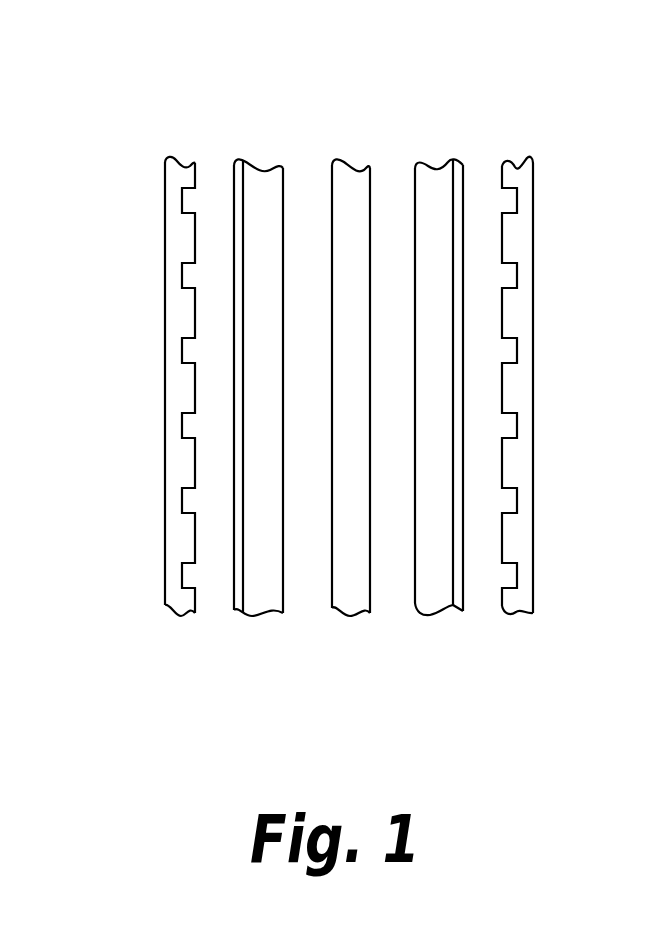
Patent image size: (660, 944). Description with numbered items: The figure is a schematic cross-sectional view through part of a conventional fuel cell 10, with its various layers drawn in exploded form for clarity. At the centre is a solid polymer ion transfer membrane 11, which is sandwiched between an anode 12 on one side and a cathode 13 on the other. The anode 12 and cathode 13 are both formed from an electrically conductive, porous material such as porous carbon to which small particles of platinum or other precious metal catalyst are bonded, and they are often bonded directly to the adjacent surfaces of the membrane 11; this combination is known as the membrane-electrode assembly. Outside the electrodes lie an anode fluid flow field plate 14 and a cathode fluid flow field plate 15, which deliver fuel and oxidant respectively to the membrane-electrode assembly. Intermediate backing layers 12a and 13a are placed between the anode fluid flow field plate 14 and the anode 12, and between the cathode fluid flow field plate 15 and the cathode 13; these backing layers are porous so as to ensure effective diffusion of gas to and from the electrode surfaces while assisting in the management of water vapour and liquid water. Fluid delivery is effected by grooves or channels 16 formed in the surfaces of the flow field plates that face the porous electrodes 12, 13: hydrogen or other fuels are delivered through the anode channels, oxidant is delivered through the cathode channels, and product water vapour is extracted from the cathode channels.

The fuel cell 10 is at (170, 89).
The solid polymer ion transfer membrane 11 is at (352, 615).
The anode 12 is at (246, 392).
The intermediate backing layer 12a is at (240, 162).
The cathode 13 is at (463, 392).
The intermediate backing layer 13a is at (458, 162).
The anode fluid flow field plate 14 is at (168, 607).
The cathode fluid flow field plate 15 is at (517, 613).
The grooves or channels 16 is at (165, 290).